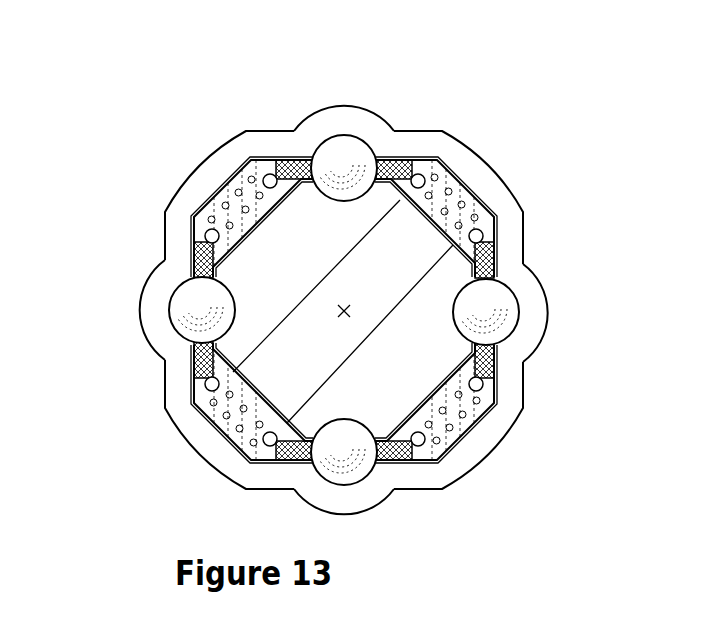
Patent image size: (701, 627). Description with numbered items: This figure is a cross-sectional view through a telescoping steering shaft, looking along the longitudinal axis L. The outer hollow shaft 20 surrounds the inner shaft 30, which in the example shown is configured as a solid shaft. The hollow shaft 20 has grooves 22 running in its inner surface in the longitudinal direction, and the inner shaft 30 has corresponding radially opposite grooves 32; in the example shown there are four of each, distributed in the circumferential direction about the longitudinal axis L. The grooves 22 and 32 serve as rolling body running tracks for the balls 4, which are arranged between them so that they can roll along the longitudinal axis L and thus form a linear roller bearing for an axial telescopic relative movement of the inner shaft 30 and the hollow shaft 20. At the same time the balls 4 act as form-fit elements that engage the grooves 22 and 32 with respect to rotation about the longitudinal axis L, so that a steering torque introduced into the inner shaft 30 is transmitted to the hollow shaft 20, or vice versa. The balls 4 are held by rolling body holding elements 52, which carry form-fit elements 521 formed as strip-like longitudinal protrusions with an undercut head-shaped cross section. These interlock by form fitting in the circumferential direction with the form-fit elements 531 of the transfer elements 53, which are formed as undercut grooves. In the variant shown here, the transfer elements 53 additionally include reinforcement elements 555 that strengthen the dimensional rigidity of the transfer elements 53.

The hollow shaft 20 is at (223, 168).
The grooves 22 is at (325, 153).
The balls 4 is at (338, 168).
The rolling body holding elements 52 is at (387, 161).
The form-fit elements 521 is at (420, 176).
The form-fit elements 531 is at (445, 168).
The transfer elements 53 is at (200, 206).
The reinforcement elements 555 is at (247, 191).
The inner shaft 30 is at (313, 282).
The grooves 32 is at (320, 203).
The longitudinal axis L is at (344, 311).